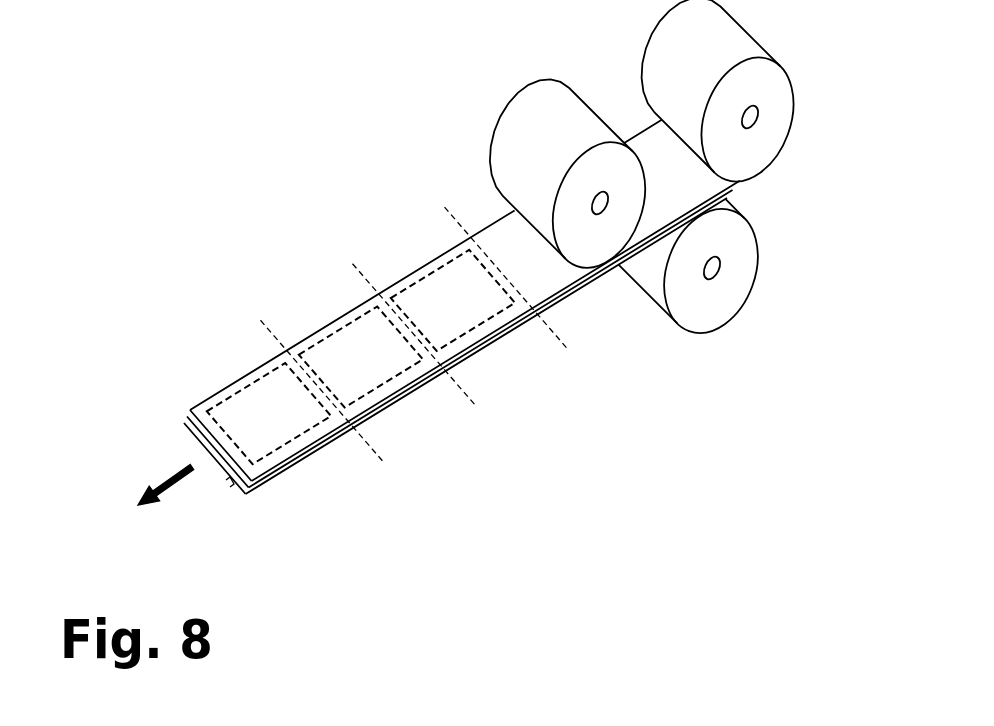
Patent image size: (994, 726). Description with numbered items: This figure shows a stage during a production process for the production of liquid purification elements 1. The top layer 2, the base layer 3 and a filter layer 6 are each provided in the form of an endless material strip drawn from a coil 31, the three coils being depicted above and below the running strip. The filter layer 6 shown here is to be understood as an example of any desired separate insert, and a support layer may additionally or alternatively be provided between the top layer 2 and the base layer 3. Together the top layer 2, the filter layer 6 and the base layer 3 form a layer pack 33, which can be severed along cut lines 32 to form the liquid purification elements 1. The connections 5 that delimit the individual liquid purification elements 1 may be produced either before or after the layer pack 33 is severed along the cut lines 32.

The liquid purification element 1 is at (267, 437).
The top layer 2 is at (185, 411).
The base layer 3 is at (247, 491).
The connections 5 is at (313, 437).
The filter layer 6 is at (184, 420).
The coil 31 is at (487, 140).
The cut lines 32 is at (260, 320).
The layer pack 33 is at (226, 480).